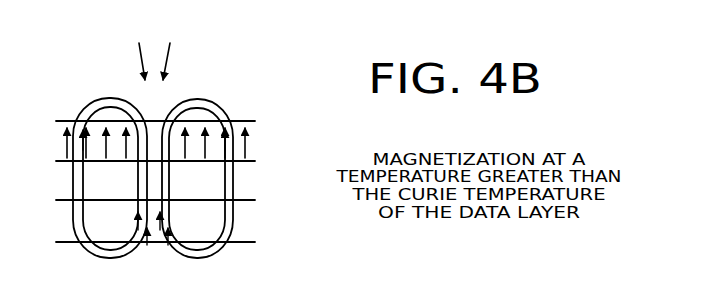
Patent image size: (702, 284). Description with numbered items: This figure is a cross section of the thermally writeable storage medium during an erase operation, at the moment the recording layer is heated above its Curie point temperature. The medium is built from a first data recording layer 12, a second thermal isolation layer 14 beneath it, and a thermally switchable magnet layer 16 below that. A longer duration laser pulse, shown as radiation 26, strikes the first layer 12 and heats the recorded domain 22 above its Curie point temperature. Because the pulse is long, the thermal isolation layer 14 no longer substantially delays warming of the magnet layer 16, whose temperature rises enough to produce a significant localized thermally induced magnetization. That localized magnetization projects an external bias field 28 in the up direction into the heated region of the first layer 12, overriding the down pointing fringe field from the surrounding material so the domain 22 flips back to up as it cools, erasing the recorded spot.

The first data recording layer 12 is at (253, 148).
The second thermal isolation layer 14 is at (253, 188).
The thermally switchable magnet layer 16 is at (253, 228).
The domain 22 is at (156, 121).
The radiation 26 is at (154, 51).
The external bias field 28 is at (203, 100).